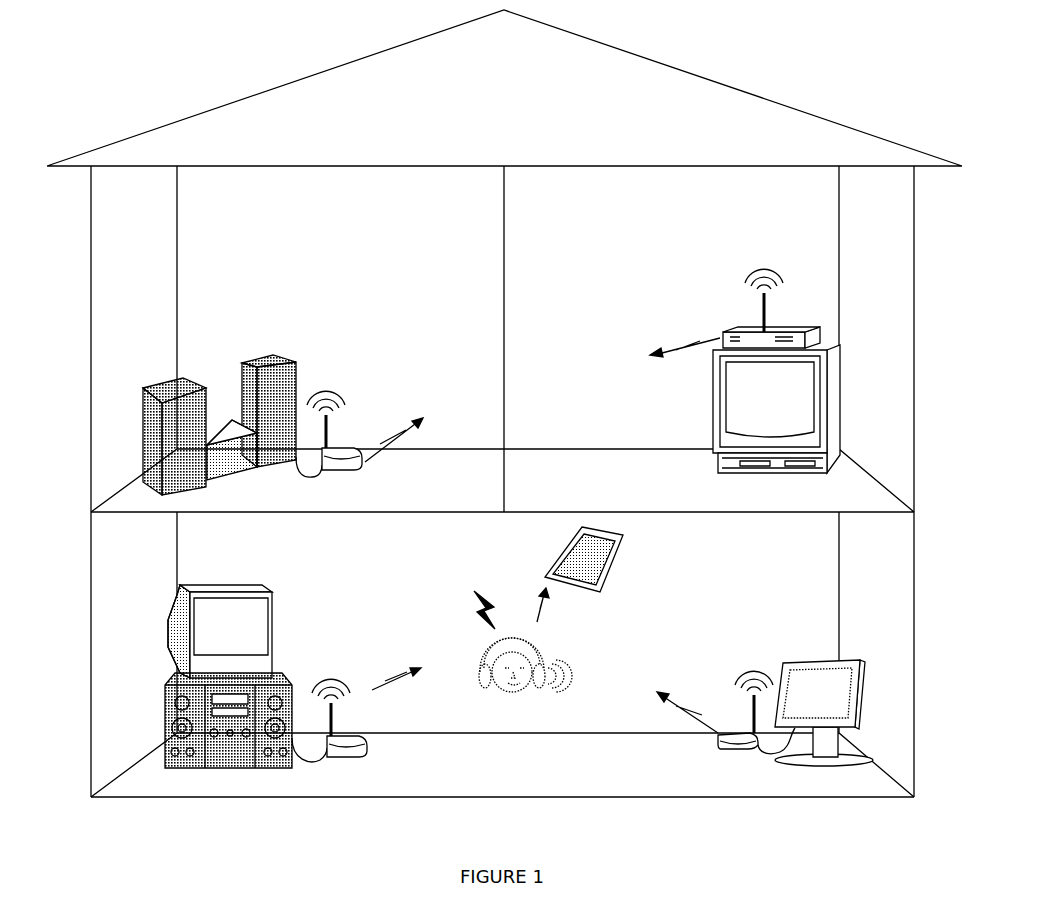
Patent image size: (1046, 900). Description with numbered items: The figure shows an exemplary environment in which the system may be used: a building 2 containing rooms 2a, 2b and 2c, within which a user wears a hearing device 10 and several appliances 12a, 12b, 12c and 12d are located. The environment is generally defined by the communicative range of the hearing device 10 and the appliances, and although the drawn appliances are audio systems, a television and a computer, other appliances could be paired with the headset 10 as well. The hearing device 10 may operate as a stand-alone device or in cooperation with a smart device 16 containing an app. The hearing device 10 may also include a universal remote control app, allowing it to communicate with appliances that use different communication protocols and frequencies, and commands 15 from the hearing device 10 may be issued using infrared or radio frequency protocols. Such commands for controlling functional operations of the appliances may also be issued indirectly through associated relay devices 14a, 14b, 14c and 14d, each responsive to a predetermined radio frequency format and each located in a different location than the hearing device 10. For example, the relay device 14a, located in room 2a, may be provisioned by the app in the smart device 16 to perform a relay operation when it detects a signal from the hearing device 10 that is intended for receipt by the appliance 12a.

The building 2 is at (311, 72).
The room 2a is at (113, 330).
The room 2b is at (678, 165).
The room 2c is at (111, 610).
The hearing device 10 is at (541, 668).
The appliance 12a is at (270, 357).
The appliance 12b is at (820, 332).
The appliance 12c is at (168, 636).
The appliance 12d is at (843, 763).
The relay device 14a is at (348, 449).
The relay device 14b is at (764, 332).
The relay device 14c is at (366, 745).
The relay device 14d is at (722, 733).
The commands 15 is at (478, 613).
The smart device 16 is at (614, 555).